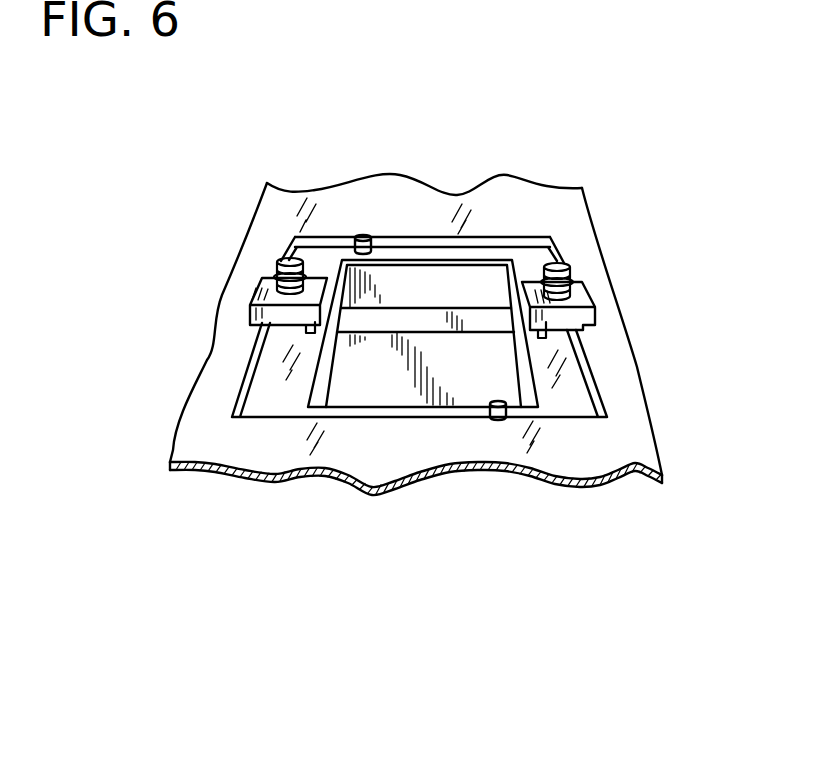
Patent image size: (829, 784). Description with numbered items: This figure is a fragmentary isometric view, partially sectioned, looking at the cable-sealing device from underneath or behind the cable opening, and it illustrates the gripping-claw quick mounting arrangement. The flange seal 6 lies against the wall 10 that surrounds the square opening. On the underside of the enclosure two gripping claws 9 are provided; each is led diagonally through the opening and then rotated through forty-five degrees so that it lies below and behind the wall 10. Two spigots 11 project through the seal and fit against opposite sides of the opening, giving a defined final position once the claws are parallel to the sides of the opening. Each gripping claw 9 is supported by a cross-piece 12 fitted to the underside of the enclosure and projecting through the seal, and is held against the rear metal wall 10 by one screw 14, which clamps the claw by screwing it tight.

The flange seal 6 is at (281, 373).
The gripping claw 9 is at (260, 294).
The wall 10 is at (393, 458).
The spigot 11 is at (363, 237).
The cross-piece 12 is at (307, 324).
The screw 14 is at (287, 260).